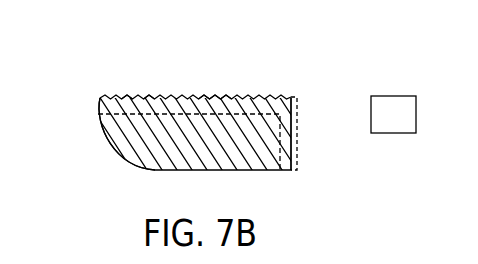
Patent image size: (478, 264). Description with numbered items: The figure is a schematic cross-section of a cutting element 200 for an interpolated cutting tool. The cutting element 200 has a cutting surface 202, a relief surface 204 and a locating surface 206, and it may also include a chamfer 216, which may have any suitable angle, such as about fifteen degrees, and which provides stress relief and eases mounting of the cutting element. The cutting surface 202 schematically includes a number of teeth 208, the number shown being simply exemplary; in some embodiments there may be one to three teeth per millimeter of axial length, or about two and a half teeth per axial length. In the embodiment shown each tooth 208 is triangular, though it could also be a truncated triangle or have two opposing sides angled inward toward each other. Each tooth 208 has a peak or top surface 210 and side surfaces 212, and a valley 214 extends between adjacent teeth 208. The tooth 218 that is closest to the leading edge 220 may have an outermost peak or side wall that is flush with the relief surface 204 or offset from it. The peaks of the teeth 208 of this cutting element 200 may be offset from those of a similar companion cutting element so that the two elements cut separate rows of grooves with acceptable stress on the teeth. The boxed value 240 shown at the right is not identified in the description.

The cutting element 200 is at (81, 130).
The cutting surface 202 is at (159, 94).
The relief surface 204 is at (300, 144).
The locating surface 206 is at (127, 120).
The tooth 208 is at (125, 94).
The top surface 210 is at (228, 95).
The side surfaces 212 is at (215, 96).
The valley 214 is at (147, 94).
The chamfer 216 is at (98, 96).
The tooth 218 is at (276, 95).
The leading edge 220 is at (300, 160).
The angle 240 degrees 240 is at (393, 114).